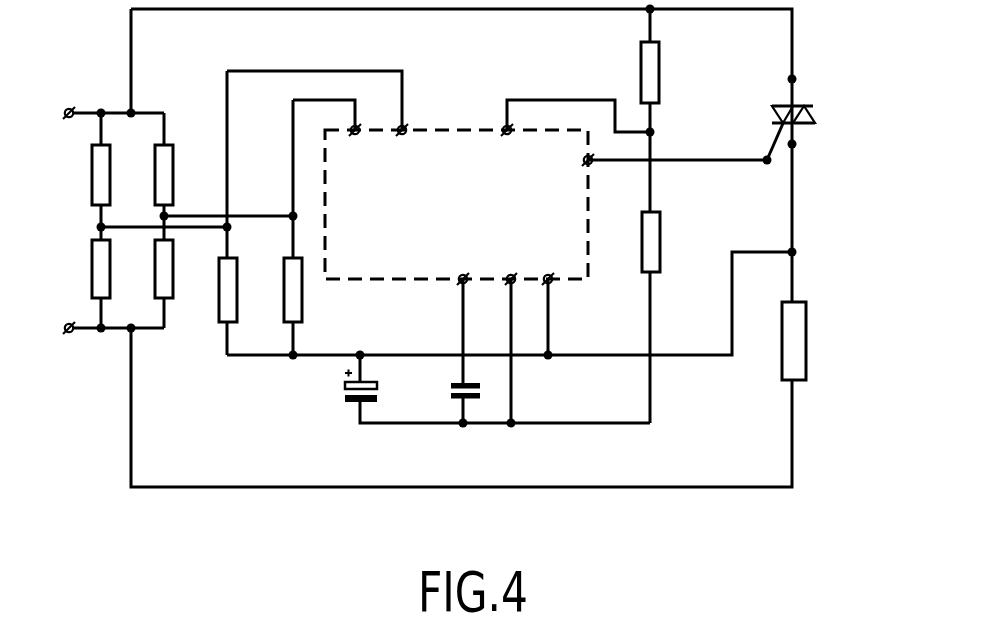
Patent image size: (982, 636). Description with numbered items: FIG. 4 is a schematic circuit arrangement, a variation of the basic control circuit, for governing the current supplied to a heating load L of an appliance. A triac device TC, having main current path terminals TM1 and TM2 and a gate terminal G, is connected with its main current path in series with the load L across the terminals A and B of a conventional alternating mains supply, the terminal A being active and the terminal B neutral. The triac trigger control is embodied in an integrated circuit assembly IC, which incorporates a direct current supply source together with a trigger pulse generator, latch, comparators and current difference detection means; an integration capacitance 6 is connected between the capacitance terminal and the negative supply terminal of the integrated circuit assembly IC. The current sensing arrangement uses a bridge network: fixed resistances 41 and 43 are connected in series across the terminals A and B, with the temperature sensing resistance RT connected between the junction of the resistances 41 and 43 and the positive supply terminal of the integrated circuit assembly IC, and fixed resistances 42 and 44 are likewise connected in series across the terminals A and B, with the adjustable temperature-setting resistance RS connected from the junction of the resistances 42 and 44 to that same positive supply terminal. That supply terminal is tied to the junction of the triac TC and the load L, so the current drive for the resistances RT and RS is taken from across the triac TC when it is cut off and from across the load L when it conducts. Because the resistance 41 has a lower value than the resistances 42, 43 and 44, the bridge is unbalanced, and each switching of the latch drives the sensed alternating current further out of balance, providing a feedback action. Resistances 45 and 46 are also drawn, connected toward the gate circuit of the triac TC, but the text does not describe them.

The fixed resistance 41 is at (110, 177).
The fixed resistance 42 is at (173, 177).
The fixed resistance 43 is at (110, 270).
The fixed resistance 44 is at (173, 270).
The resistor 45 is at (659, 68).
The resistor 46 is at (660, 238).
The capacitance 6 is at (451, 397).
The temperature sensing resistance RT is at (237, 286).
The adjustable temperature-setting resistance RS is at (302, 286).
The integrated circuit assembly IC is at (427, 125).
The triac device TC is at (815, 113).
The main current path terminal TM1 is at (792, 144).
The main current path terminal TM2 is at (792, 79).
The gate terminal G is at (774, 157).
The load L is at (806, 342).
The terminal A is at (113, 97).
The terminal B is at (113, 346).